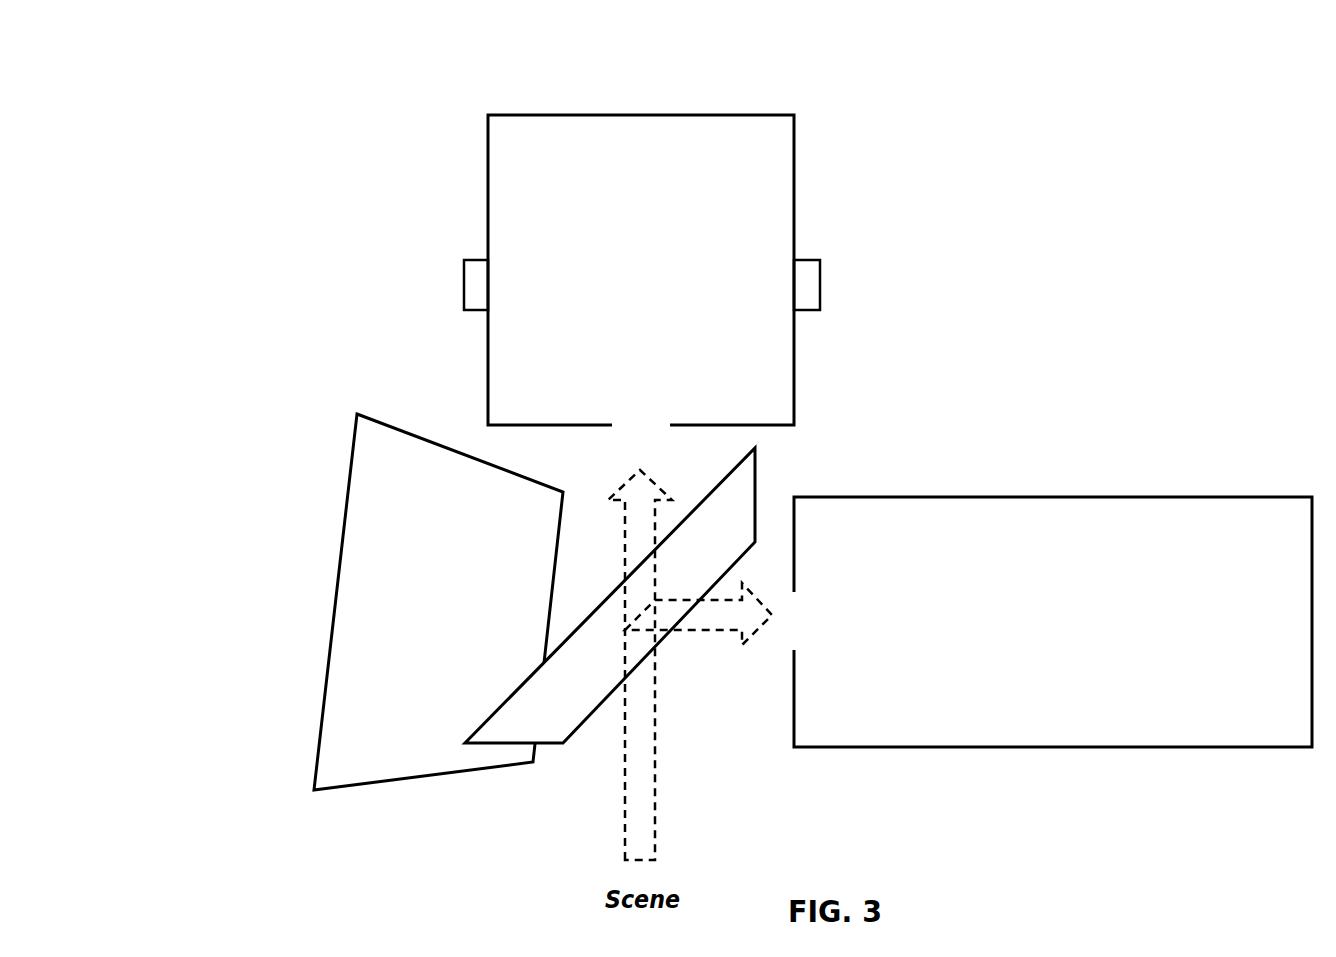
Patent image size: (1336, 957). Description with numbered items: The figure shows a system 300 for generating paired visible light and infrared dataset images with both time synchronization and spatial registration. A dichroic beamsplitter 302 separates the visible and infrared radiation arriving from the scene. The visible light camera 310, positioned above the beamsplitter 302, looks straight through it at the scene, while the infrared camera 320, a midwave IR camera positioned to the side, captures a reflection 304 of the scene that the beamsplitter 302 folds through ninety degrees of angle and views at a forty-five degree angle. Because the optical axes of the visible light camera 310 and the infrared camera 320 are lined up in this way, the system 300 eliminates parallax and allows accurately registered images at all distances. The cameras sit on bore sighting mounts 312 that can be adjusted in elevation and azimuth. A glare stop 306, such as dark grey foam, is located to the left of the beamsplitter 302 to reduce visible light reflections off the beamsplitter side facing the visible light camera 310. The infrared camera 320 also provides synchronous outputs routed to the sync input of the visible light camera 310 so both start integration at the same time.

The system 300 is at (250, 359).
The dichroic beamsplitter 302 is at (547, 760).
The reflection 304 is at (635, 637).
The glare stop 306 is at (340, 702).
The visible light camera 310 is at (500, 80).
The bore sighting mounts 312 is at (818, 260).
The infrared camera 320 is at (1031, 747).